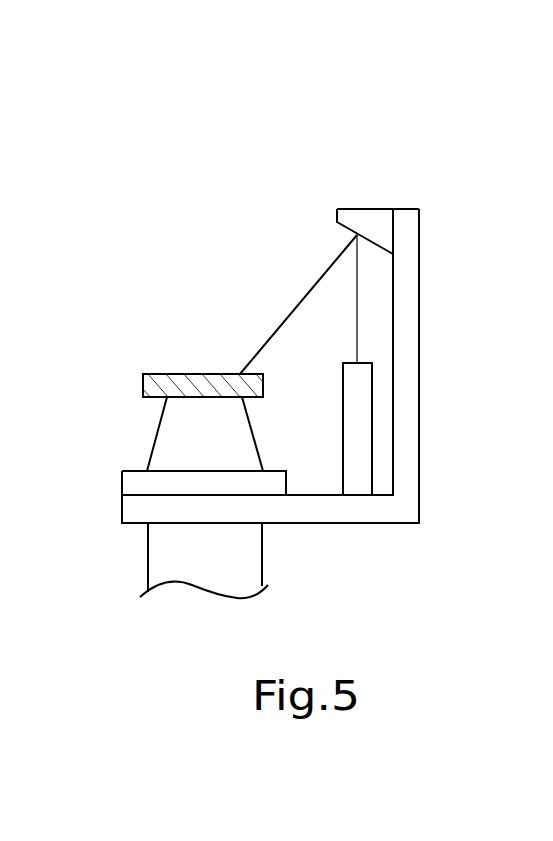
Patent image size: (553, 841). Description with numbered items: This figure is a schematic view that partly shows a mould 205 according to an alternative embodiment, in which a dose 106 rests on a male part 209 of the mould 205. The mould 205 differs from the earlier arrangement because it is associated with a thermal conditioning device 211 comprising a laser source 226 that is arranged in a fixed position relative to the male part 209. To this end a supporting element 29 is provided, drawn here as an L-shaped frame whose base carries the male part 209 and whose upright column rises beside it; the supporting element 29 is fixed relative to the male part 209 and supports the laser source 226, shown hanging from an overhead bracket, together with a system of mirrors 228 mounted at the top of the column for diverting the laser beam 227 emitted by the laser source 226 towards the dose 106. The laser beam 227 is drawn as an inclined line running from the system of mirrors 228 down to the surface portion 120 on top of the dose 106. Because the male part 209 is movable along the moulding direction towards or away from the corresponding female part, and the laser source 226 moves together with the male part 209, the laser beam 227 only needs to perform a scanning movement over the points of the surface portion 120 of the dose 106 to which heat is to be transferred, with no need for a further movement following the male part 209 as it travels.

The supporting element 29 is at (404, 473).
The dose 106 is at (143, 387).
The surface portion 120 is at (222, 373).
The mould 205 is at (143, 327).
The male part 209 is at (152, 443).
The thermal conditioning device 211 is at (326, 319).
The laser source 226 is at (370, 411).
The laser beam 227 is at (315, 278).
The system of mirrors 228 is at (377, 222).